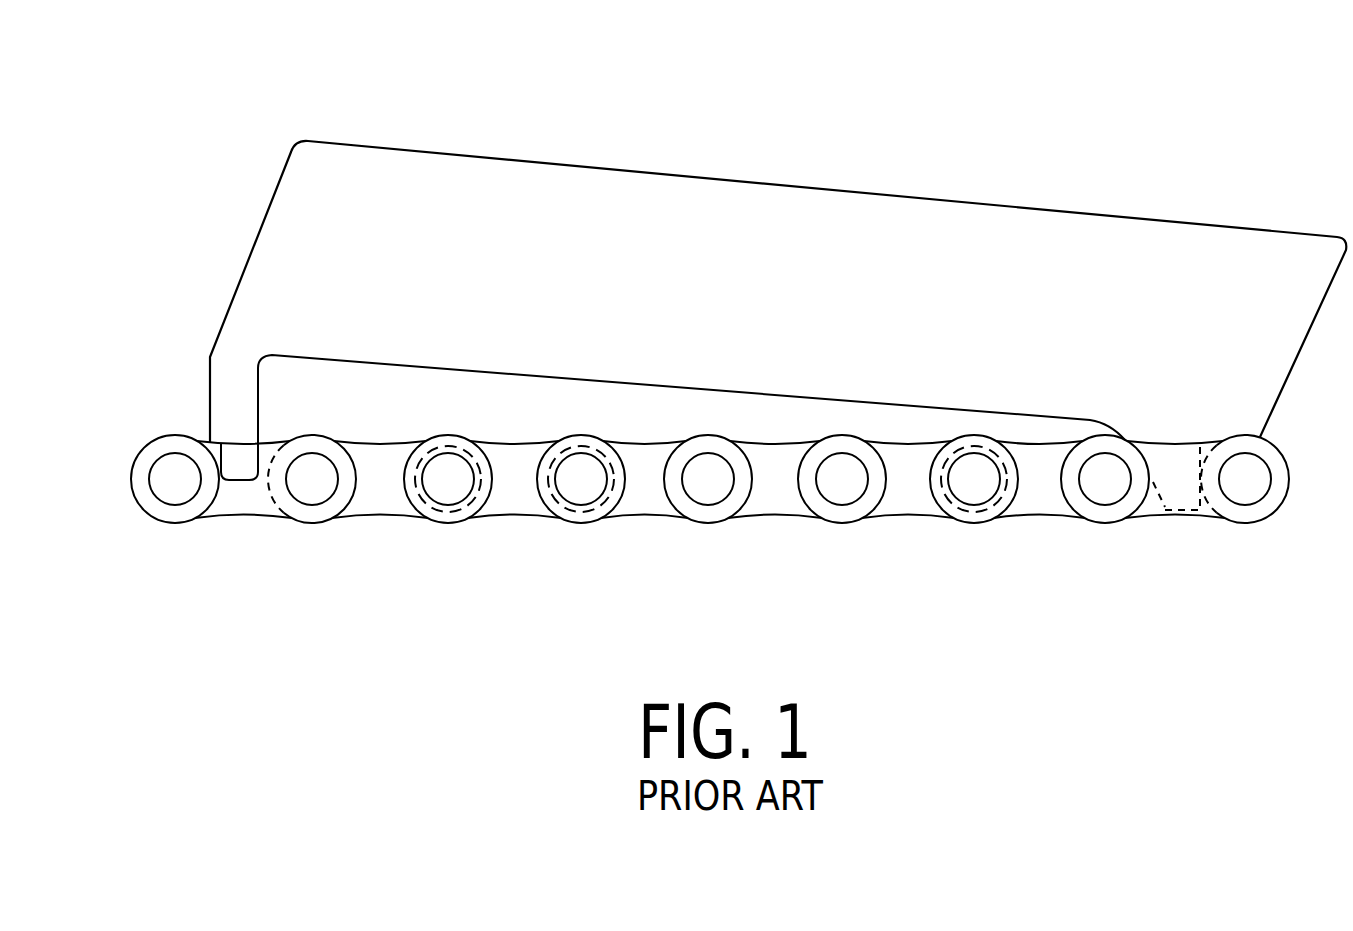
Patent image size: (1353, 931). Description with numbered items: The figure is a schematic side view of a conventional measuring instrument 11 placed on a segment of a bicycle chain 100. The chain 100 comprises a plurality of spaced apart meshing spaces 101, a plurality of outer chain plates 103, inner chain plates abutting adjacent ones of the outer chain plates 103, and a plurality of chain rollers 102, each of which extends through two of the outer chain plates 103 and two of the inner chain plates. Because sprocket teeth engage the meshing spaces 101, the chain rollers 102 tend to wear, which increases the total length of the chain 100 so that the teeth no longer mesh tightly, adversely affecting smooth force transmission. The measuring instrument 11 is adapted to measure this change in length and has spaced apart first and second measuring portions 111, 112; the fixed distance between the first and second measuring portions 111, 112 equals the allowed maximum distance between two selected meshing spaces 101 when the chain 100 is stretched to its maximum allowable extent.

The measuring instrument 11 is at (833, 273).
The second measuring portion 112 is at (238, 387).
The first measuring portion 111 is at (1197, 520).
The chain 100 is at (912, 505).
The meshing spaces 101 is at (242, 500).
The chain rollers 102 is at (425, 515).
The outer chain plates 103 is at (150, 515).